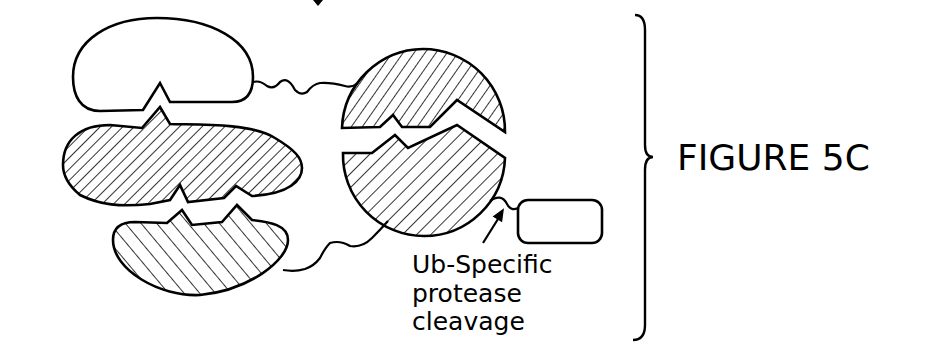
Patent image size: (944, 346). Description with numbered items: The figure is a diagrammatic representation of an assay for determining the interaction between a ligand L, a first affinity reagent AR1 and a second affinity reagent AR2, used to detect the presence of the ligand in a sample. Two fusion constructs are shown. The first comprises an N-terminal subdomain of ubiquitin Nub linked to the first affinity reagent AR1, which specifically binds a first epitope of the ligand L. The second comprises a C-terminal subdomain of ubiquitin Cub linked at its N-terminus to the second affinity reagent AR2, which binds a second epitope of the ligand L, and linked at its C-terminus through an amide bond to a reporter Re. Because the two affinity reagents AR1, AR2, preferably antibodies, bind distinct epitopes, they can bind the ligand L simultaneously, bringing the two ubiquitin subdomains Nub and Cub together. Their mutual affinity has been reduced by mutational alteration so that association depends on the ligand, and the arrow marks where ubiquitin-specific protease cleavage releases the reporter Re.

The first affinity reagent AR1 is at (163, 64).
The ligand L is at (182, 156).
The second affinity reagent AR2 is at (200, 250).
The N-terminal subdomain of ubiquitin Nub is at (423, 90).
The C-terminal subdomain of ubiquitin Cub is at (424, 180).
The reporter Re is at (560, 221).